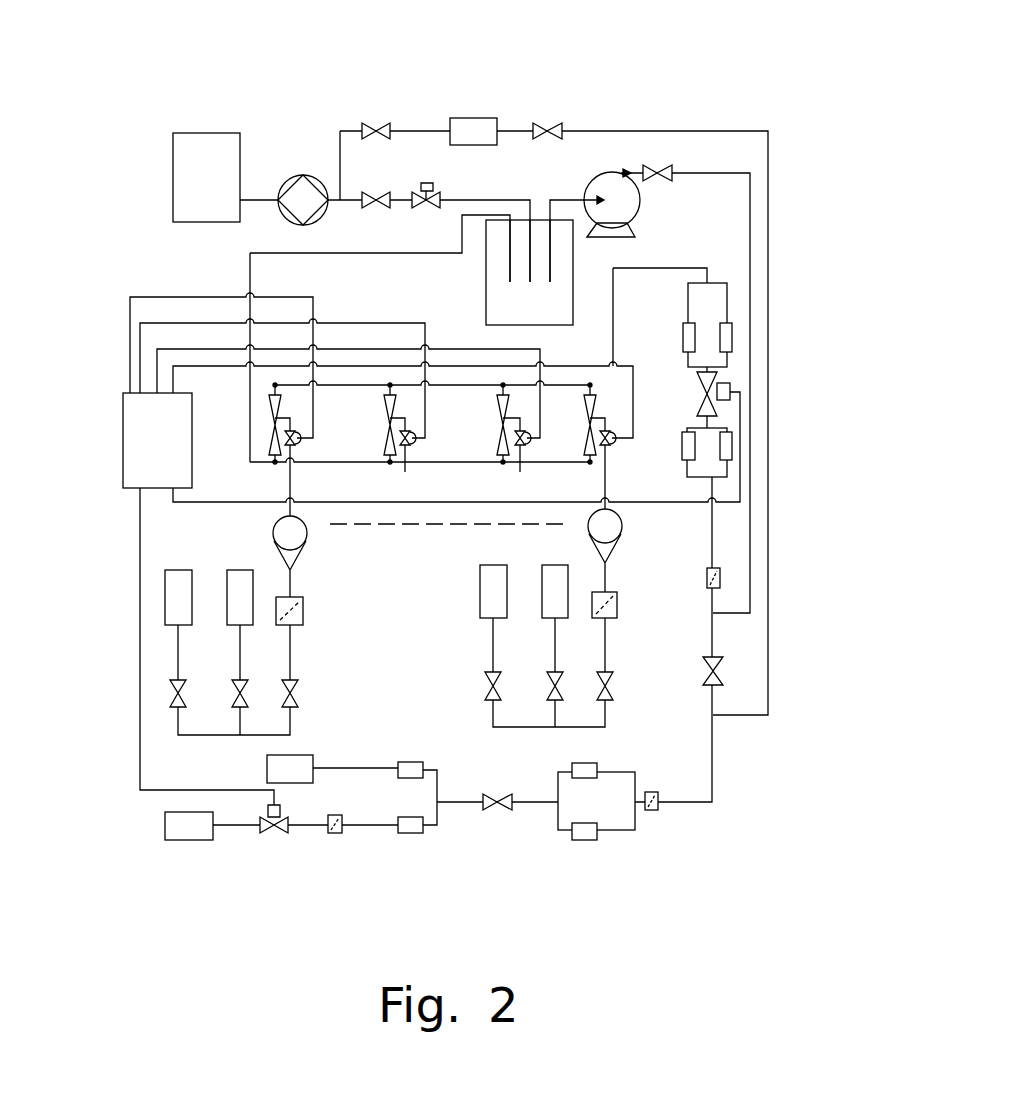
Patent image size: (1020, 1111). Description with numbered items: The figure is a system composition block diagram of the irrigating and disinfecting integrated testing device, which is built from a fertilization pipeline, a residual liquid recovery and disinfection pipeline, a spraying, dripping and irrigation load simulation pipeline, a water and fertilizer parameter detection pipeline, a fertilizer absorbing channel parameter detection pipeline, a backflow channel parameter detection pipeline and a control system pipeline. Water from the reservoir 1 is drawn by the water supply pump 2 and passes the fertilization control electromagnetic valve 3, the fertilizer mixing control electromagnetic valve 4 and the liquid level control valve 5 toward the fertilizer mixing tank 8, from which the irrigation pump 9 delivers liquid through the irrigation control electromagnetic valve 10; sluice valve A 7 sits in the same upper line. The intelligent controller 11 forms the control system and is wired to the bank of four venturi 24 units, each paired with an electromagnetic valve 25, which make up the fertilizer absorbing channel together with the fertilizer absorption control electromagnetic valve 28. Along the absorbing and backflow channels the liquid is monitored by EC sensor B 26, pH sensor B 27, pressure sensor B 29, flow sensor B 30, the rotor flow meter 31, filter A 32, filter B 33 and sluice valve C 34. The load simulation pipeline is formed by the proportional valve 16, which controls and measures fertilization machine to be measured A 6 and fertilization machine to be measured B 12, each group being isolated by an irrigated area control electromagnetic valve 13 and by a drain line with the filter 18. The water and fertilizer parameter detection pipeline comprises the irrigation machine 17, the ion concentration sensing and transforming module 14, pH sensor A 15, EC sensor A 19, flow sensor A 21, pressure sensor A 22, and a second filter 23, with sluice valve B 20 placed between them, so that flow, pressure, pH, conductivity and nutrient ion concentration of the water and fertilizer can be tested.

The reservoir 1 is at (234, 133).
The water supply pump 2 is at (303, 175).
The fertilization control electromagnetic valve 3 is at (376, 123).
The fertilizer mixing control electromagnetic valve 4 is at (376, 200).
The liquid level control valve 5 is at (431, 183).
The fertilization machine to be measured A 6 is at (497, 118).
The sluice valve A 7 is at (548, 123).
The fertilizer mixing tank 8 is at (556, 220).
The irrigation pump 9 is at (615, 172).
The irrigation control electromagnetic valve 10 is at (659, 173).
The intelligent controller 11 is at (125, 393).
The fertilization machine to be measured B 12 is at (165, 590).
The irrigated area control electromagnetic valve 13 is at (177, 682).
The ion concentration sensing and transforming module 14 is at (297, 753).
The pH sensor A 15 is at (317, 770).
The proportional valve 16 is at (273, 825).
The irrigation machine 17 is at (165, 837).
The filter 18 is at (332, 833).
The EC sensor A 19 is at (408, 833).
The sluice valve B 20 is at (500, 803).
The flow sensor A 21 is at (578, 778).
The pressure sensor A 22 is at (577, 838).
The filter 23 is at (652, 812).
The venturi 24 is at (590, 385).
The electromagnetic valve 25 is at (605, 437).
The EC sensor B 26 is at (695, 333).
The pH sensor B 27 is at (728, 332).
The fertilizer absorption control electromagnetic valve 28 is at (732, 385).
The pressure sensor B 29 is at (693, 437).
The flow sensor B 30 is at (730, 455).
The rotor flow meter 31 is at (620, 525).
The filter A 32 is at (617, 592).
The filter B 33 is at (720, 568).
The sluice valve C 34 is at (718, 657).